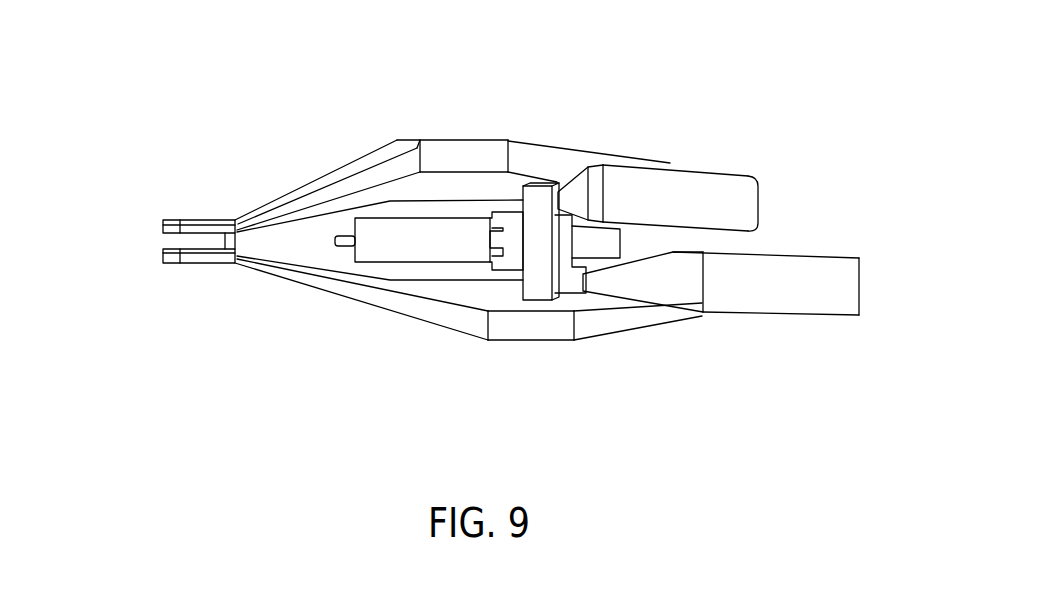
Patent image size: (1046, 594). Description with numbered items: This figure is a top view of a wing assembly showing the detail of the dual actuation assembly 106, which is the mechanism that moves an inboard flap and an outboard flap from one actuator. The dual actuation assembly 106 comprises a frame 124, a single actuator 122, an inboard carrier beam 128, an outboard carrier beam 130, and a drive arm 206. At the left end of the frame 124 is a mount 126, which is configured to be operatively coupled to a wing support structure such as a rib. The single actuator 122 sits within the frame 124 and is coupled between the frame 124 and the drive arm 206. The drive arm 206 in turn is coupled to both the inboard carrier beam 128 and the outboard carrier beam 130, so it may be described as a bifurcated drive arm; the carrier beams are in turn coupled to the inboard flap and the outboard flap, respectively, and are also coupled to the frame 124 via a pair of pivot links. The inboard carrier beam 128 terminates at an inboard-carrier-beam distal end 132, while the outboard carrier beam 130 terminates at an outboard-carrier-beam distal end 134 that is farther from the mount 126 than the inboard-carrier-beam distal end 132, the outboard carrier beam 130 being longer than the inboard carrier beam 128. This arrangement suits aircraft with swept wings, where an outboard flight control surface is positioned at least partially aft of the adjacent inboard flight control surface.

The dual actuation assembly 106 is at (707, 50).
The single actuator 122 is at (400, 218).
The frame 124 is at (305, 178).
The mount 126 is at (172, 220).
The inboard carrier beam 128 is at (722, 167).
The outboard carrier beam 130 is at (777, 320).
The inboard-carrier-beam distal end 132 is at (758, 205).
The outboard-carrier-beam distal end 134 is at (860, 285).
The drive arm 206 is at (540, 183).